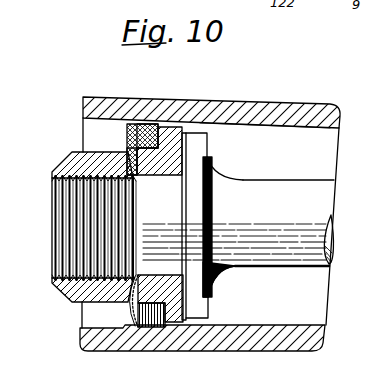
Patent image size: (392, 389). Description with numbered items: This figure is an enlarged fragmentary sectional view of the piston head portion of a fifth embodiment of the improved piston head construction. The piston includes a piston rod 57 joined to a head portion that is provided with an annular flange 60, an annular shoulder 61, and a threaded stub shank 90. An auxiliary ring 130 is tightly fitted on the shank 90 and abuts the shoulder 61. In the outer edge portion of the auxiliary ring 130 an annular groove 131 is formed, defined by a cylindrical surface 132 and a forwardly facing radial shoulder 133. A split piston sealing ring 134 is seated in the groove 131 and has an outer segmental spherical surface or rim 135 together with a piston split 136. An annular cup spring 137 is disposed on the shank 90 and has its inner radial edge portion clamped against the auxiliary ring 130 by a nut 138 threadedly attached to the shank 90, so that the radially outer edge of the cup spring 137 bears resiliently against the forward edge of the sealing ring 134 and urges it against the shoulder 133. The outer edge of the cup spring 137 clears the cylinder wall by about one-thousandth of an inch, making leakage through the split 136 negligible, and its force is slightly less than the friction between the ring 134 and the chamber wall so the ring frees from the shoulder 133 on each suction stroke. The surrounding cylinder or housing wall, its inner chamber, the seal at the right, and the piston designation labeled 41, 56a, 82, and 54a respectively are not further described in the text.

The auxiliary ring 130 is at (208, 105).
The housing 41 is at (302, 126).
The chamber 56a is at (211, 140).
The nut 138 is at (66, 160).
The annular cup spring 137 is at (132, 307).
The split piston sealing ring 134 is at (122, 122).
The cylindrical surface 132 is at (128, 122).
The annular groove 131 is at (144, 125).
The forwardly facing radial shoulder 133 is at (171, 126).
The piston split 136 is at (157, 327).
The outer segmental spherical surface 135 is at (149, 327).
The annular shoulder 61 is at (181, 221).
The threaded stub shank 90 is at (168, 197).
The annular flange 60 is at (222, 275).
The piston rod 57 is at (298, 267).
The bore surface 54a is at (293, 175).
The seal 82 is at (334, 240).